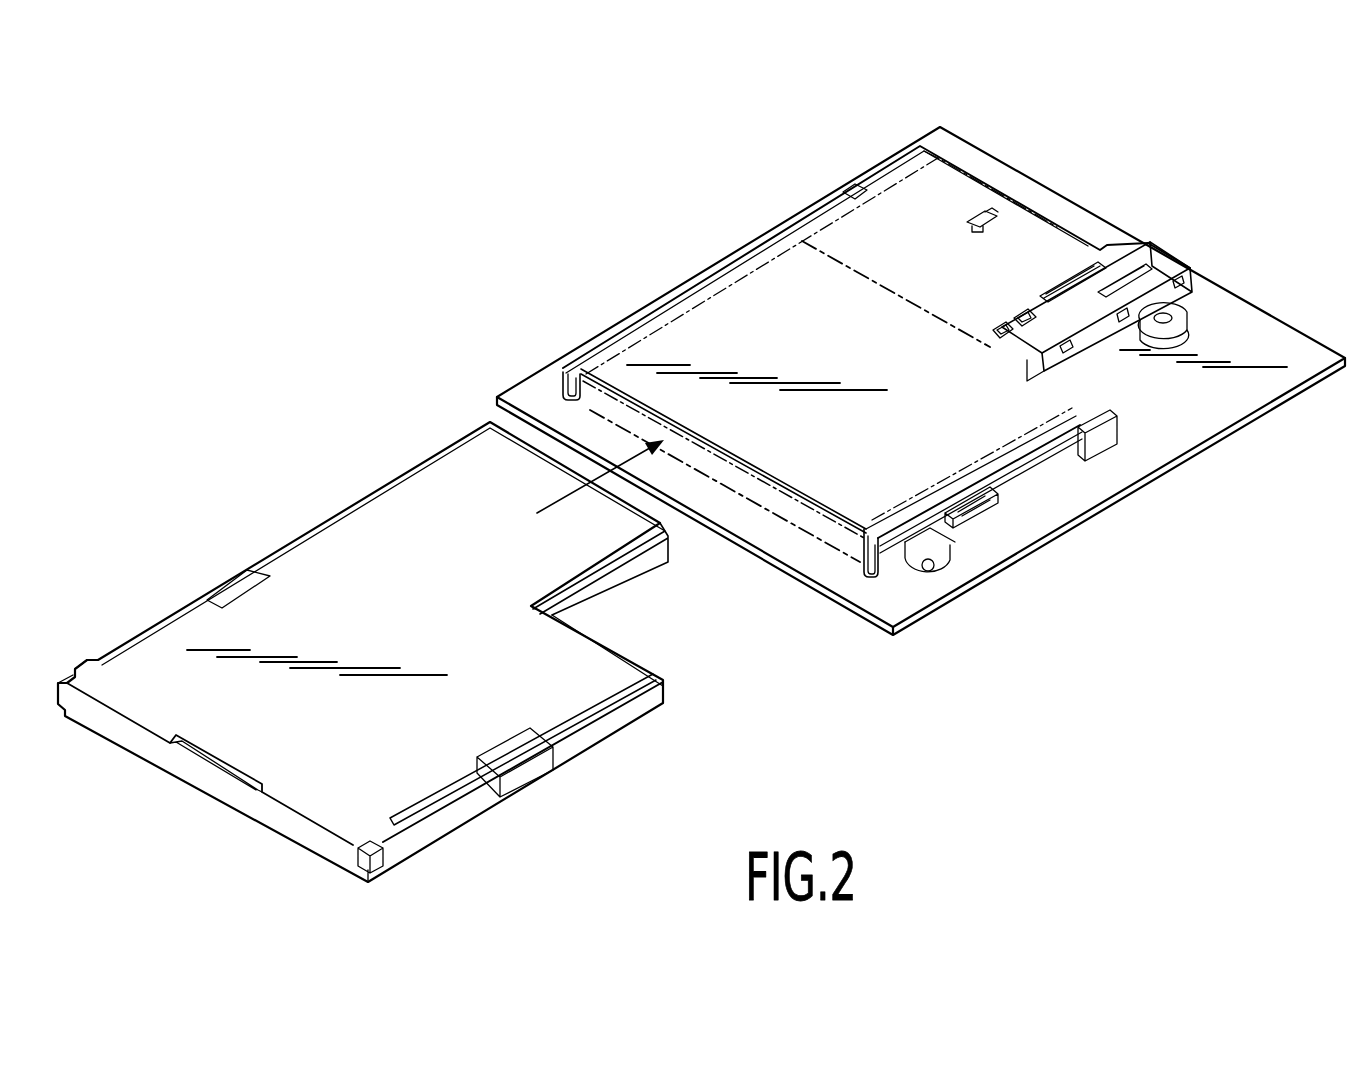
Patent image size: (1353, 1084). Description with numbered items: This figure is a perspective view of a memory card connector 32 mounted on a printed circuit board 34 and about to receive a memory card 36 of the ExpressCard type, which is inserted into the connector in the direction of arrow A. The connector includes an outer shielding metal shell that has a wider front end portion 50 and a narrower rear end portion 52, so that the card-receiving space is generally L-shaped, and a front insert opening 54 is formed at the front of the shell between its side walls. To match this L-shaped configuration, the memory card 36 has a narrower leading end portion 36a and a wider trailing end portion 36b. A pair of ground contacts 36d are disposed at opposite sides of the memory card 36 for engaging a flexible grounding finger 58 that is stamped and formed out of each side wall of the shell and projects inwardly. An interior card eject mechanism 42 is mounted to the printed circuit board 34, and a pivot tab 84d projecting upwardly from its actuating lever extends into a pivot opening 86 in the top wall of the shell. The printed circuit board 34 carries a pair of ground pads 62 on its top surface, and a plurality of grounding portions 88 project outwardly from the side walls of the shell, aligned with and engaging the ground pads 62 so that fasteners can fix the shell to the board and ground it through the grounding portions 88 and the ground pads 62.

The memory card connector 32 is at (1064, 204).
The printed circuit board 34 is at (1285, 303).
The memory card 36 is at (363, 652).
The leading end portion 36a is at (510, 497).
The trailing end portion 36b is at (345, 786).
The ground contacts 36d is at (240, 587).
The card eject mechanism 42 is at (1128, 370).
The front end portion 50 is at (740, 300).
The rear end portion 52 is at (913, 200).
The front insert opening 54 is at (735, 487).
The flexible grounding finger 58 is at (990, 507).
The ground pads 62 is at (927, 581).
The pivot tab 84d is at (968, 227).
The pivot opening 86 is at (989, 211).
The grounding portions 88 is at (947, 565).
The arrow A is at (593, 480).